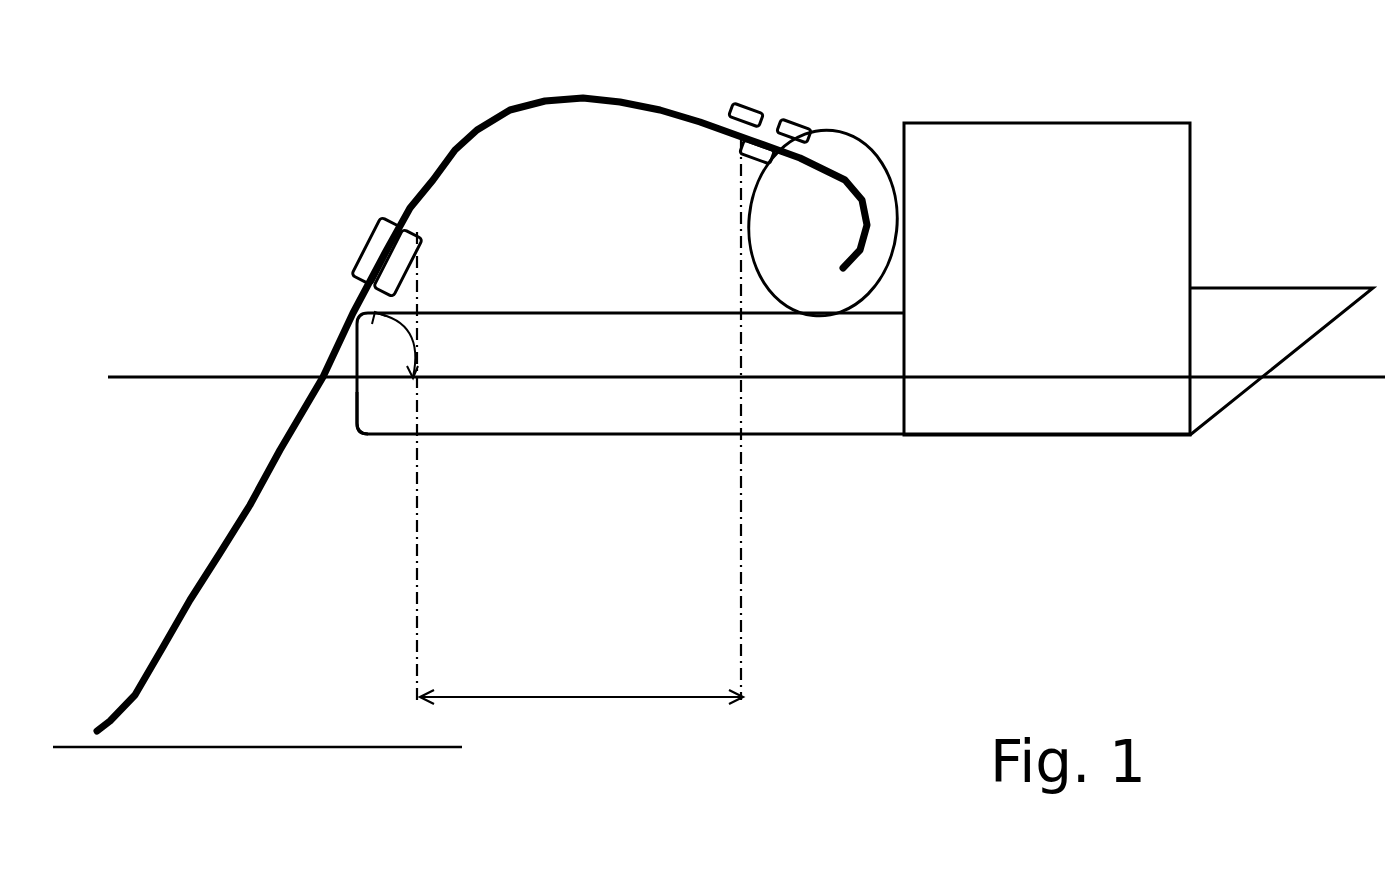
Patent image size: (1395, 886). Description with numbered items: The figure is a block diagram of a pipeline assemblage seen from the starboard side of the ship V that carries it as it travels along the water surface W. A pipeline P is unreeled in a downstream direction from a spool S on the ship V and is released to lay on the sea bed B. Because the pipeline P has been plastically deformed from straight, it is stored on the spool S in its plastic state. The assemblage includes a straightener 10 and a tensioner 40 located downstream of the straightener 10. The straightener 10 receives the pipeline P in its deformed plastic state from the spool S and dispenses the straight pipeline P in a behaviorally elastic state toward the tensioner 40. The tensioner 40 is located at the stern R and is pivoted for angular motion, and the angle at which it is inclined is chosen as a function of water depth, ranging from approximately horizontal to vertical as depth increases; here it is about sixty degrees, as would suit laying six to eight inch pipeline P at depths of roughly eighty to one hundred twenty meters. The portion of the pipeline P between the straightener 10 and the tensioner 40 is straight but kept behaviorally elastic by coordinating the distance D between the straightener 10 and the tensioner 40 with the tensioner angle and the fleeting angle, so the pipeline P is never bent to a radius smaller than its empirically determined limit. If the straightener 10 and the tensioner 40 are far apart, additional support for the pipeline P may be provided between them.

The straightener 10 is at (782, 150).
The tensioner 40 is at (367, 250).
The spool S is at (748, 243).
The pipeline P is at (218, 558).
The water surface W is at (130, 377).
The sea bed B is at (230, 747).
The ship V is at (872, 437).
The stern R is at (356, 413).
The distance D is at (578, 697).